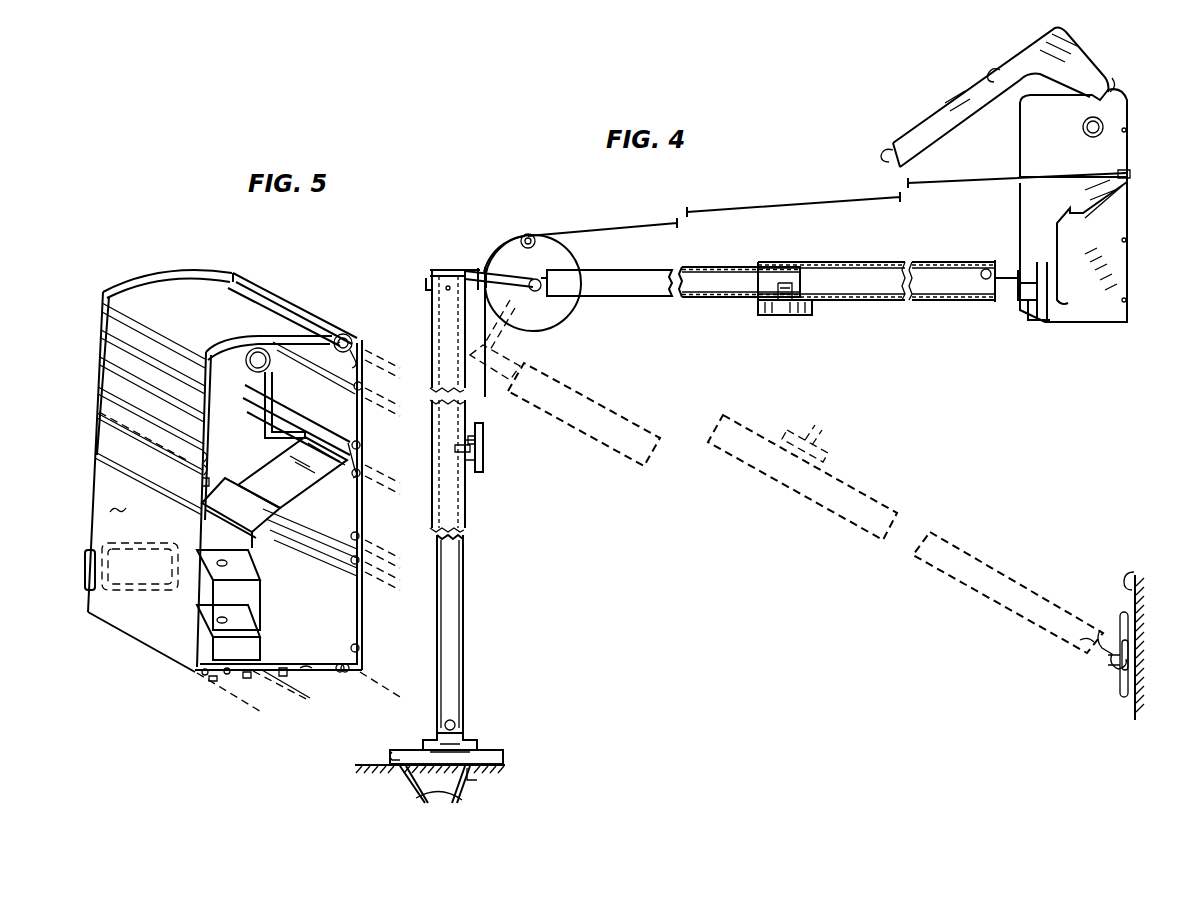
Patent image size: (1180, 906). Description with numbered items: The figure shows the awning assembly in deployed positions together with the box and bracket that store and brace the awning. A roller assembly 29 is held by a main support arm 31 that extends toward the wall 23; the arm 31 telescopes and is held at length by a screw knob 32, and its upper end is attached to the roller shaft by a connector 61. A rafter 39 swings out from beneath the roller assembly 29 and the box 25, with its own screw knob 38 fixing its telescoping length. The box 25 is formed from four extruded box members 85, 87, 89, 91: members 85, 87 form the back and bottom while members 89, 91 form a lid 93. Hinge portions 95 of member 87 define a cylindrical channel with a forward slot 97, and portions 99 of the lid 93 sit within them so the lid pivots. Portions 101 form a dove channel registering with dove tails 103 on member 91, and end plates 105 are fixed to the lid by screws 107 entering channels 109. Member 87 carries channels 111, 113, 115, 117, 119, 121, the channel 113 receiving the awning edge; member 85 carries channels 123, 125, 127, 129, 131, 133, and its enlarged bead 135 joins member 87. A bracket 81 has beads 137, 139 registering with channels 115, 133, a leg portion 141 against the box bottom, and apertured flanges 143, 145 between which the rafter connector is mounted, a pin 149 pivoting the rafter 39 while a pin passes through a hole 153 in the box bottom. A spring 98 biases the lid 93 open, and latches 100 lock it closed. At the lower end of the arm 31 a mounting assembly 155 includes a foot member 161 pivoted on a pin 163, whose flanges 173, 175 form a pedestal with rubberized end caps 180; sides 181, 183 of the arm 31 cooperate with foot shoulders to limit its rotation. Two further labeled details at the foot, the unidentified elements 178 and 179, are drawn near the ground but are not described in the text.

In FIG. 4, the wall 23 is at (1135, 634).
In FIG. 4, the box 25 is at (1006, 219).
In FIG. 5, the box 25 is at (96, 650).
In FIG. 4, the roller assembly 29 is at (535, 225).
In FIG. 4, the main support arm 31 is at (455, 602).
In FIG. 4, the screw knob 32 is at (487, 463).
In FIG. 4, the screw knob 38 is at (781, 315).
In FIG. 4, the rafter 39 is at (845, 300).
In FIG. 4, the connector 61 is at (483, 266).
In FIG. 4, the bracket 81 is at (1075, 213).
In FIG. 5, the box member 85 is at (306, 675).
In FIG. 5, the box member 87 is at (364, 518).
In FIG. 5, the box member 89 is at (155, 283).
In FIG. 5, the box member 91 is at (96, 482).
In FIG. 5, the lid 93 is at (82, 396).
In FIG. 5, the portions 95 is at (357, 330).
In FIG. 5, the longitudinal slot 97 is at (262, 293).
In FIG. 5, the spring 98 is at (228, 372).
In FIG. 5, the portions 99 is at (296, 310).
In FIG. 5, the latches 100 is at (83, 575).
In FIG. 5, the portions 101 is at (208, 482).
In FIG. 5, the dove tails 103 is at (198, 473).
In FIG. 4, the end plates 105 is at (1088, 50).
In FIG. 4, the screws 107 is at (992, 74).
In FIG. 5, the channels 109 is at (270, 331).
In FIG. 5, the channel 111 is at (356, 360).
In FIG. 4, the channel 113 is at (1133, 172).
In FIG. 5, the channel 113 is at (366, 443).
In FIG. 5, the channel 115 is at (347, 473).
In FIG. 5, the channel 117 is at (369, 387).
In FIG. 5, the channel 119 is at (366, 474).
In FIG. 5, the channel 121 is at (366, 538).
In FIG. 5, the channel 123 is at (353, 565).
In FIG. 5, the channel 125 is at (362, 647).
In FIG. 5, the channel 127 is at (365, 667).
In FIG. 5, the channel 129 is at (340, 675).
In FIG. 5, the channel 131 is at (247, 678).
In FIG. 5, the channel 133 is at (213, 678).
In FIG. 5, the enlarged bead 135 is at (333, 554).
In FIG. 5, the enlarged bead 137 is at (366, 460).
In FIG. 5, the enlarged bead 139 is at (207, 675).
In FIG. 5, the leg portion 141 is at (283, 675).
In FIG. 5, the apertured flange 143 is at (197, 527).
In FIG. 5, the apertured flange 145 is at (203, 610).
In FIG. 4, the pin 149 is at (1006, 292).
In FIG. 5, the hole 153 is at (227, 673).
In FIG. 4, the mounting assembly 155 is at (1094, 679).
In FIG. 5, the mounting assembly 155 is at (117, 513).
In FIG. 4, the foot member 161 is at (458, 744).
In FIG. 4, the pin 163 is at (453, 722).
In FIG. 4, the flange 173 is at (478, 784).
In FIG. 4, the flange 175 is at (396, 781).
In FIG. 4, the ground arc 178 is at (460, 804).
In FIG. 4, the latch 179 is at (393, 747).
In FIG. 4, the rubberized end caps 180 is at (487, 750).
In FIG. 4, the side 181 is at (437, 703).
In FIG. 4, the side 183 is at (465, 653).